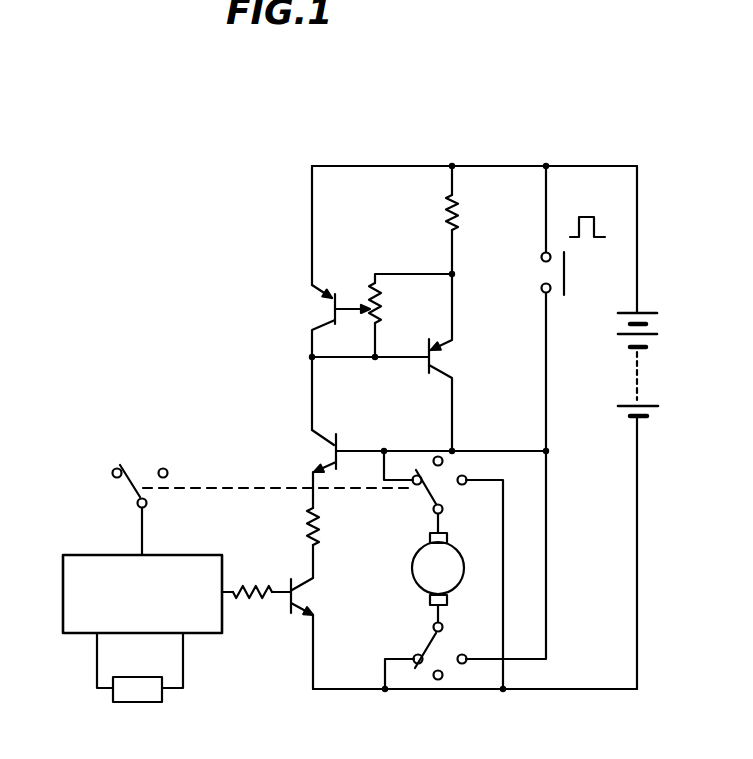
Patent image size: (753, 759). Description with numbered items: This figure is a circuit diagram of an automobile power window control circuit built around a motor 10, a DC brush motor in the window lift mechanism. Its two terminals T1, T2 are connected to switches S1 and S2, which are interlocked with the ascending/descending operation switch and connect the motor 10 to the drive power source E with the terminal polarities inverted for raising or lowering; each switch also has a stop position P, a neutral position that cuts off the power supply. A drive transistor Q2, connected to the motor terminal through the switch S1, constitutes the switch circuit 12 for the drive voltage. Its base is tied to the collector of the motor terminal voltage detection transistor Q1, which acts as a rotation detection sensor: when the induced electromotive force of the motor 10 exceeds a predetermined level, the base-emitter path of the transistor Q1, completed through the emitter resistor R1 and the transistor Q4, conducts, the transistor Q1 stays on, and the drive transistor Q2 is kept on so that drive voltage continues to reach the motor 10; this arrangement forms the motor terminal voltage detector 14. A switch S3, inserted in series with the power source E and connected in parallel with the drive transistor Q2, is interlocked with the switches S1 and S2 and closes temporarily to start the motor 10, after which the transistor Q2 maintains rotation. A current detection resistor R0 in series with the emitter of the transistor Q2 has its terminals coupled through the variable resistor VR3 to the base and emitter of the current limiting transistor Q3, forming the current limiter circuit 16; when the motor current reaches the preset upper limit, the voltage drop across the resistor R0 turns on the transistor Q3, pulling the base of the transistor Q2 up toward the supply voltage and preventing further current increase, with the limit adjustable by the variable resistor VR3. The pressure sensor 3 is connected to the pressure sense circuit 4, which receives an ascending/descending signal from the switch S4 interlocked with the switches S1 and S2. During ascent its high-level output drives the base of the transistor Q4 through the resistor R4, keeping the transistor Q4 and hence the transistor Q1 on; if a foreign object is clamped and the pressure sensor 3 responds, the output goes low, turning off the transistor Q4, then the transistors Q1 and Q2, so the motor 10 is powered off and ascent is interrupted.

The current limiter circuit 16 is at (399, 248).
The switch circuit 12 is at (505, 328).
The motor terminal voltage detector 14 is at (372, 433).
The motor 10 is at (418, 577).
The pressure sense circuit 4 is at (185, 555).
The pressure sensor 3 is at (150, 695).
The current detection resistor R0 is at (458, 211).
The variable resistor VR3 is at (382, 315).
The current limiting transistor Q3 is at (332, 304).
The drive transistor Q2 is at (444, 361).
The motor terminal voltage detection transistor Q1 is at (330, 443).
The emitter resistor R1 is at (326, 527).
The transistor Q4 is at (300, 594).
The resistor R4 is at (262, 601).
The switch S4 is at (123, 486).
The stop position P is at (437, 456).
The switch S1 is at (444, 506).
The motor terminal T1 is at (448, 536).
The motor terminal T2 is at (448, 599).
The switch S2 is at (442, 628).
The switch S3 is at (566, 284).
The drive power source E is at (650, 336).